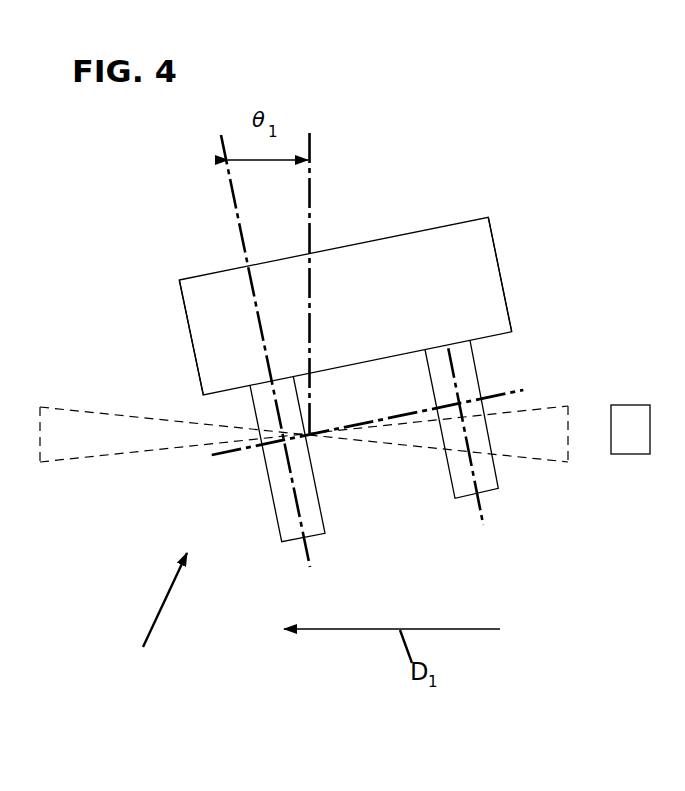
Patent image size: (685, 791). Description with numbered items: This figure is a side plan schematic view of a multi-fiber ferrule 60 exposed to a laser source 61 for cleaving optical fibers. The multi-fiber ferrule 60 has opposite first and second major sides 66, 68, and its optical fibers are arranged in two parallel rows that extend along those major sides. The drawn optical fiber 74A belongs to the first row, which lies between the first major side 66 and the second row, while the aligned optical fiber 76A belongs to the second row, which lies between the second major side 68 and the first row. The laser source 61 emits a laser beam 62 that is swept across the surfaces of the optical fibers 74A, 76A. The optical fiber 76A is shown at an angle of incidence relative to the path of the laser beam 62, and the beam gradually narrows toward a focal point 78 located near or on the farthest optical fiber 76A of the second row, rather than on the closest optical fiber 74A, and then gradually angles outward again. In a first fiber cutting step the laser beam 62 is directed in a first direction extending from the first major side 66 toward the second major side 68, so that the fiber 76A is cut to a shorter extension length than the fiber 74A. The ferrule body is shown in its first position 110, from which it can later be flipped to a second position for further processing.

The multi-fiber ferrule 60 is at (420, 213).
The laser source 61 is at (632, 404).
The laser beam 62 is at (60, 440).
The first major side 66 is at (506, 288).
The second major side 68 is at (190, 340).
The optical fiber of the first row 74A is at (490, 483).
The optical fiber of the second row 76A is at (291, 532).
The focal point 78 is at (315, 443).
The first position 110 is at (154, 613).